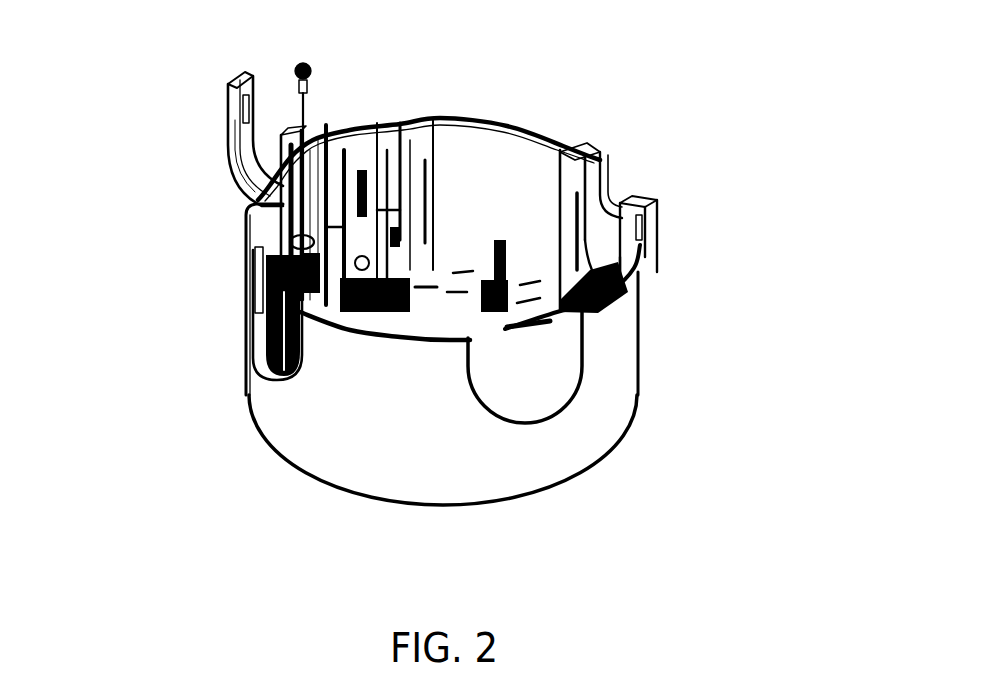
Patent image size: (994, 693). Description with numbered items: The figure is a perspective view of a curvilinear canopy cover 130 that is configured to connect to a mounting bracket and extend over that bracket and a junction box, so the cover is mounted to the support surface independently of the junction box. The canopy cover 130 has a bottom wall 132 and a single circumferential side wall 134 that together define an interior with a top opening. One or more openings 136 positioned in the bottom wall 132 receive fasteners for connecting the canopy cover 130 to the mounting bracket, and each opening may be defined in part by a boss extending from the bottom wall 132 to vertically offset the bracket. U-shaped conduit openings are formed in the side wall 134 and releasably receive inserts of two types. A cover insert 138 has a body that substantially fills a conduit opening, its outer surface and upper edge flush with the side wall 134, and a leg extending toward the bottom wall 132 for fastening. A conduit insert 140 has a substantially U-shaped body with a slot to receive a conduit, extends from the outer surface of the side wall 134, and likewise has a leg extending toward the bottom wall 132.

The curvilinear canopy cover 130 is at (778, 170).
The bottom wall 132 is at (582, 472).
The side wall 134 is at (363, 457).
The opening 136 is at (506, 275).
The cover insert 138 is at (530, 375).
The conduit insert 140 is at (230, 138).